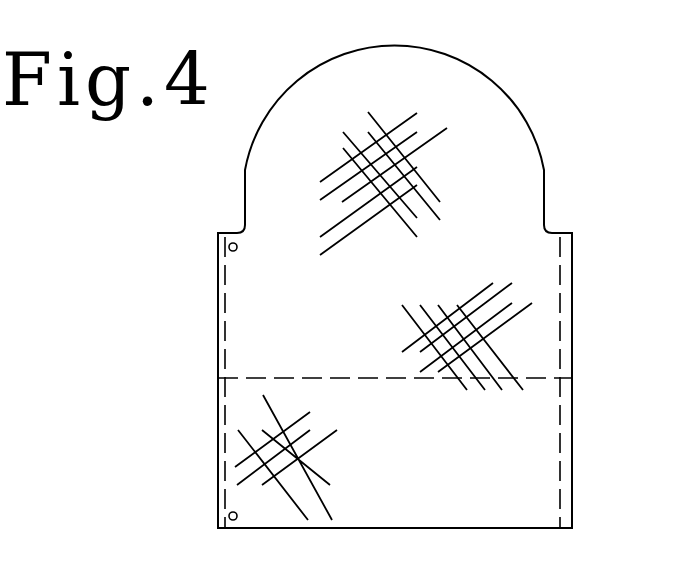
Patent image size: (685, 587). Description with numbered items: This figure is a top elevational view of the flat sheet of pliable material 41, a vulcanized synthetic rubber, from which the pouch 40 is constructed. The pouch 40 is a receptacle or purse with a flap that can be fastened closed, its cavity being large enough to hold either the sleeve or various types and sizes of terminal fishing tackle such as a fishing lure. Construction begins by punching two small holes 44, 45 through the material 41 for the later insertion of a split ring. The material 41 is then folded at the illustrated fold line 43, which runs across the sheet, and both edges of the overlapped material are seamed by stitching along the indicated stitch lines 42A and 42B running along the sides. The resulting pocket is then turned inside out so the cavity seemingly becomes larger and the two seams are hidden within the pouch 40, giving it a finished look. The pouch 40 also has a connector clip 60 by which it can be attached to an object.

The pouch 40 is at (620, 120).
The pliable material 41 is at (278, 165).
The stitch line 42A is at (218, 335).
The stitch line 42B is at (562, 273).
The fold line 43 is at (285, 380).
The hole 44 is at (229, 246).
The hole 45 is at (229, 515).
The connector clip 60 is at (671, 339).